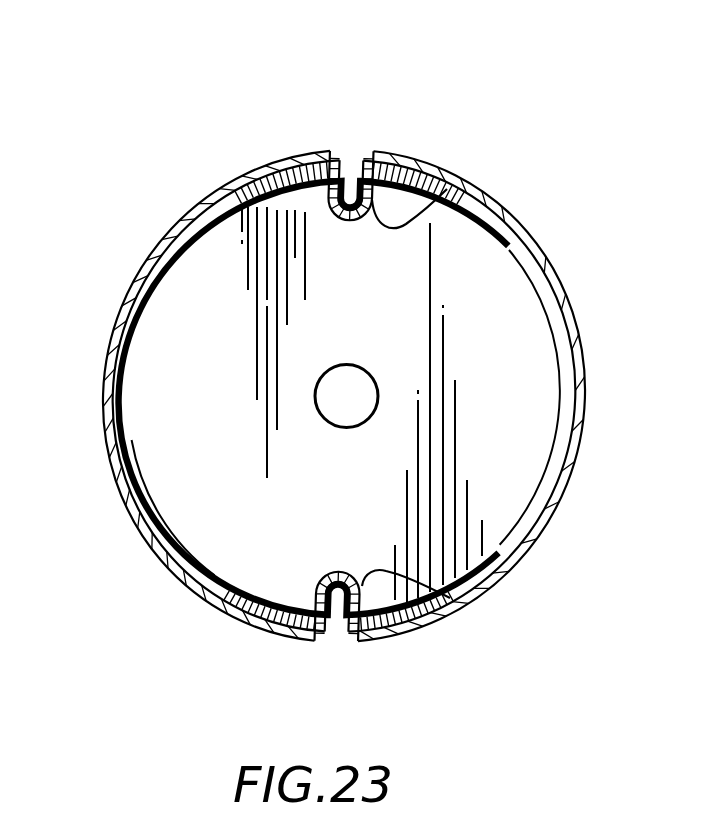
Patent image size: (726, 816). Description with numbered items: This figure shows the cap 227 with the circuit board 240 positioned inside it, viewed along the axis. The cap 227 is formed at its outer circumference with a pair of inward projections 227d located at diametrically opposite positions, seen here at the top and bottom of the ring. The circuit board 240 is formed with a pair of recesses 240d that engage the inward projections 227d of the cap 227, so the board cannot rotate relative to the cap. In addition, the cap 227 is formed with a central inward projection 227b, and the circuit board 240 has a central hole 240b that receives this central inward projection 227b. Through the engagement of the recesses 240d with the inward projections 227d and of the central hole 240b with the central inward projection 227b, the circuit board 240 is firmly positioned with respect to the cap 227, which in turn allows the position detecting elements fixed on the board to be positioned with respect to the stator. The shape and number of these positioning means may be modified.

The cap 227 is at (592, 406).
The central inward projection 227b is at (358, 405).
The inward projections 227d is at (353, 205).
The circuit board 240 is at (498, 267).
The central hole 240b is at (377, 385).
The recesses 240d is at (433, 197).